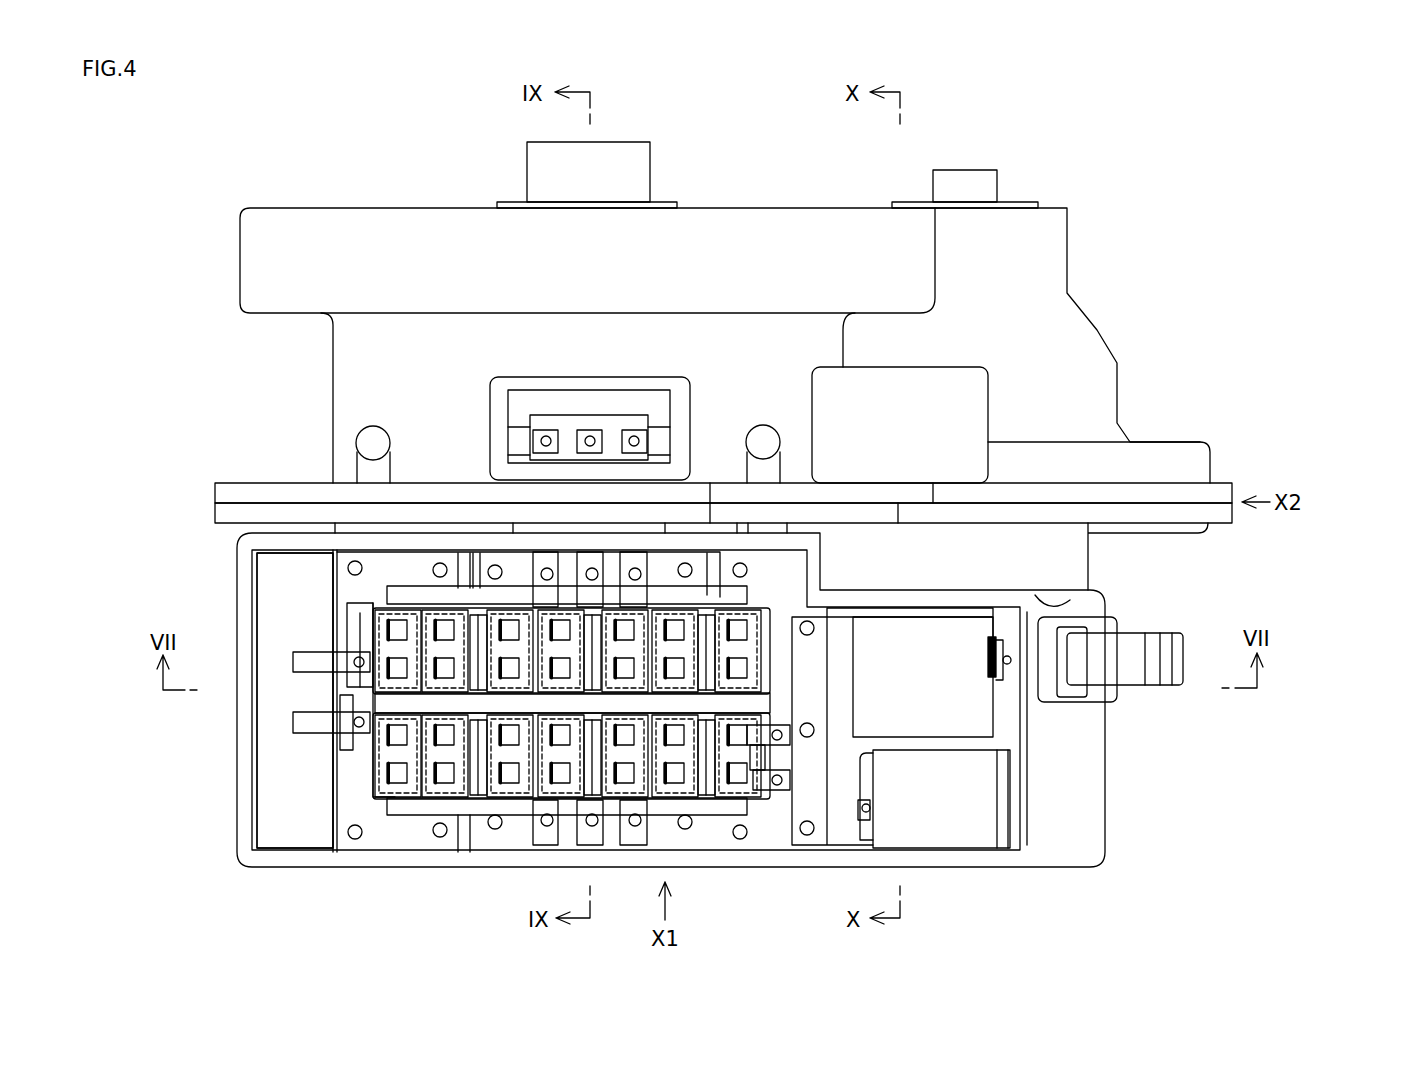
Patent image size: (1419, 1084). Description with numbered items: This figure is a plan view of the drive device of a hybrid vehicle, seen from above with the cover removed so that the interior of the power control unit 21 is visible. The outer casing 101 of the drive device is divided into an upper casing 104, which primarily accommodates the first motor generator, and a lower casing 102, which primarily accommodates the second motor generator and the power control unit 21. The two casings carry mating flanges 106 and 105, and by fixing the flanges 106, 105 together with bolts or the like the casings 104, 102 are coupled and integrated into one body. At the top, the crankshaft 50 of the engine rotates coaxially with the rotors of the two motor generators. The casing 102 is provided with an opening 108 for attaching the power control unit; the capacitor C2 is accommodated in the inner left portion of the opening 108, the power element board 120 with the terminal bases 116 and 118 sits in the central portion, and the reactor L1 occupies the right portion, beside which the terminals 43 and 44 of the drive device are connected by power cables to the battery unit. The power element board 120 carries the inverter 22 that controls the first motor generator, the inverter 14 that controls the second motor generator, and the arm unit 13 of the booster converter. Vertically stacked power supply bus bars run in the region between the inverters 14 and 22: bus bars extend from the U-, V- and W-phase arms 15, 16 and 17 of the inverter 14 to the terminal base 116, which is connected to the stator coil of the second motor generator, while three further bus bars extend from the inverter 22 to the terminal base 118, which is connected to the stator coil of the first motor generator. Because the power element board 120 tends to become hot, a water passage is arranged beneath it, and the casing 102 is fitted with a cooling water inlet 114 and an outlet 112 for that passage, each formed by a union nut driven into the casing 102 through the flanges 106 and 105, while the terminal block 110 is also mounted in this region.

The crankshaft 50 is at (651, 159).
The cooling water inlet 114 is at (762, 425).
The cooling water outlet 112 is at (356, 443).
The terminal block 110 is at (508, 406).
The terminal base 118 is at (565, 550).
The terminal base 116 is at (565, 852).
The flange 106 is at (215, 487).
The flange 105 is at (215, 510).
The casing 104 is at (1305, 200).
The casing 102 is at (1305, 865).
The casing 101 is at (1359, 865).
The opening 108 is at (265, 830).
The capacitor C2 is at (335, 568).
The power element board 120 is at (330, 852).
The V-phase arm 16 is at (453, 852).
The inverter 22 is at (358, 593).
The power control unit 21 is at (278, 640).
The inverter 14 is at (383, 755).
The U-phase arm 15 is at (383, 785).
The W-phase arm 17 is at (612, 852).
The arm unit of the booster converter 13 is at (762, 852).
The reactor L1 is at (980, 750).
The terminal 43 is at (1160, 645).
The terminal 44 is at (1185, 645).